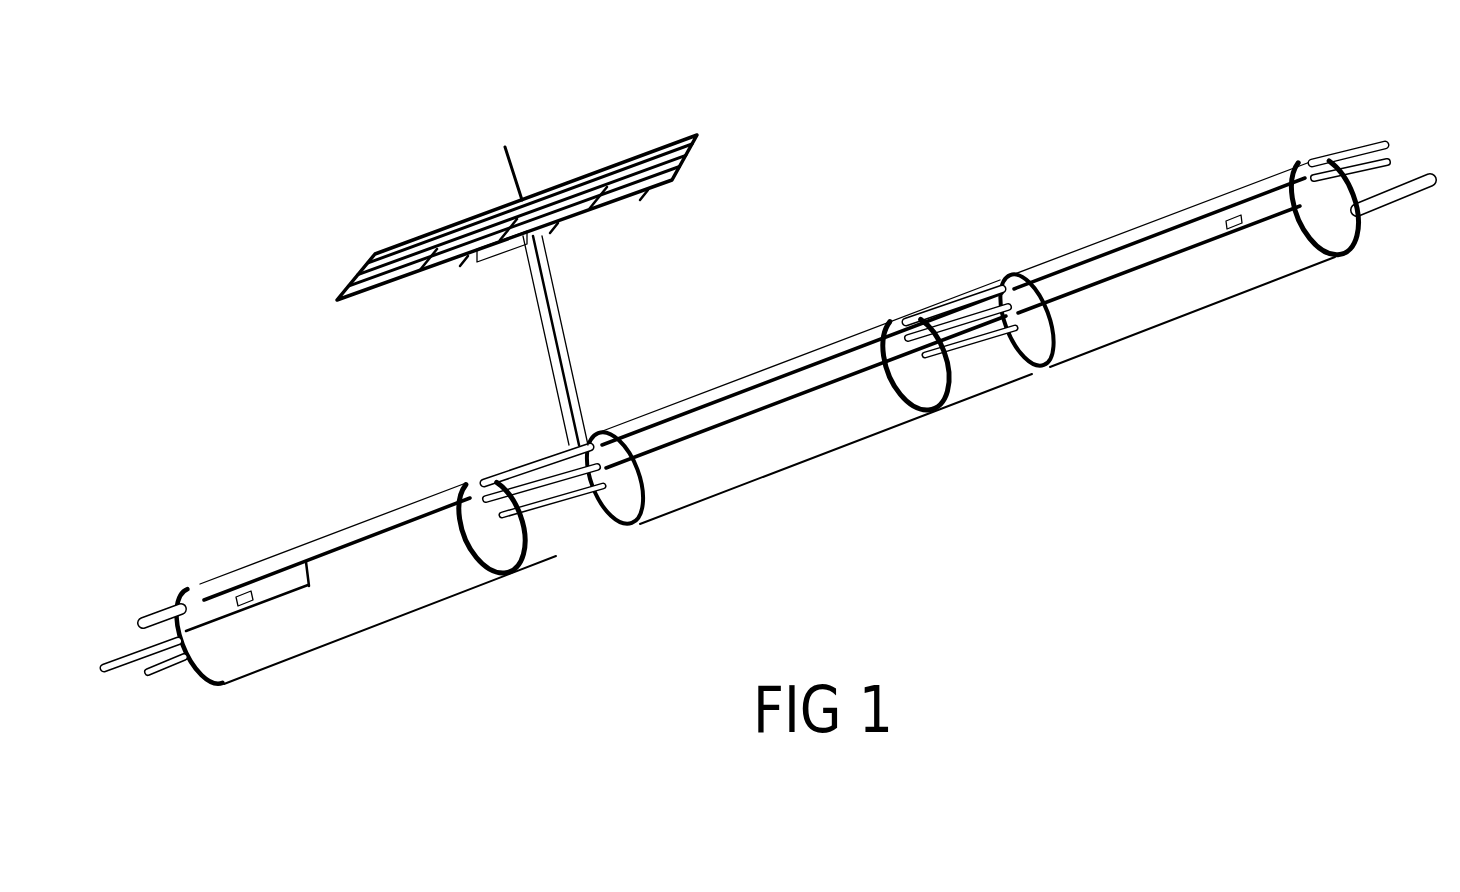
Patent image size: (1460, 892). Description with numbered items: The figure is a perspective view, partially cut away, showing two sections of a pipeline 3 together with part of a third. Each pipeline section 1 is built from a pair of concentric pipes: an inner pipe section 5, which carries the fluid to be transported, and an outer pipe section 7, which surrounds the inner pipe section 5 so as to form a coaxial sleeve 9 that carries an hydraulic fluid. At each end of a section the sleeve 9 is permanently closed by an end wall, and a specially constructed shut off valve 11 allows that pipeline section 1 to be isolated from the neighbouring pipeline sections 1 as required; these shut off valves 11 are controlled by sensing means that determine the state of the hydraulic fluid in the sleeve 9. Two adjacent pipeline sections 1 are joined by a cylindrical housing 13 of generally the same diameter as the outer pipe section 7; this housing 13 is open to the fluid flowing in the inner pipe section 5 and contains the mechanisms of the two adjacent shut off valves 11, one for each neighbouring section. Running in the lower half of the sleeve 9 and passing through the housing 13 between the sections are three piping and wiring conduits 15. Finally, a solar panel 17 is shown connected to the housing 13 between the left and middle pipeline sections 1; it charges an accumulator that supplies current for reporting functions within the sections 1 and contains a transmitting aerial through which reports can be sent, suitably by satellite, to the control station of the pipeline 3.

The pipeline section 1 is at (355, 617).
The pipeline 3 is at (1223, 197).
The inner pipe section 5 is at (505, 545).
The outer pipe section 7 is at (730, 390).
The coaxial sleeve 9 is at (818, 358).
The shut off valve 11 is at (983, 300).
The cylindrical housing 13 is at (987, 387).
The piping and wiring conduits 15 is at (963, 350).
The solar panel 17 is at (593, 172).